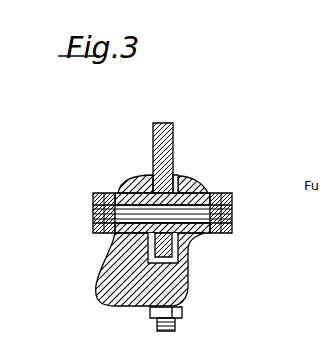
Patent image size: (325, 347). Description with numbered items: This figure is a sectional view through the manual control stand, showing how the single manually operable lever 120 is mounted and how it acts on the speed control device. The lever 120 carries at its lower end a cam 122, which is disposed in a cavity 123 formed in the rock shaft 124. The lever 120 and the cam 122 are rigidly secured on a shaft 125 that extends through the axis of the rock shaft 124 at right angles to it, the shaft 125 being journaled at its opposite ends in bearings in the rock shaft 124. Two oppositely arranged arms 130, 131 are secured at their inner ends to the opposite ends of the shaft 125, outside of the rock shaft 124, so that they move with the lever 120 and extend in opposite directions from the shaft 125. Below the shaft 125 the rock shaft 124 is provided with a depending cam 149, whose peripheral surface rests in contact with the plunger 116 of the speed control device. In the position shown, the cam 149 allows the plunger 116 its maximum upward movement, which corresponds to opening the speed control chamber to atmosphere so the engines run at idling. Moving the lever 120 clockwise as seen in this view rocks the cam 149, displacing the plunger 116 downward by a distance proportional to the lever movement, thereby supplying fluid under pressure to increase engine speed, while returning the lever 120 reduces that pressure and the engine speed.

The manually operable lever 120 is at (170, 139).
The cam 122 is at (146, 190).
The cavity 123 is at (175, 186).
The rock shaft 124 is at (181, 195).
The shaft 125 is at (232, 213).
The arm 130 is at (94, 197).
The arm 131 is at (232, 198).
The depending cam 149 is at (100, 284).
The plunger 116 is at (182, 316).